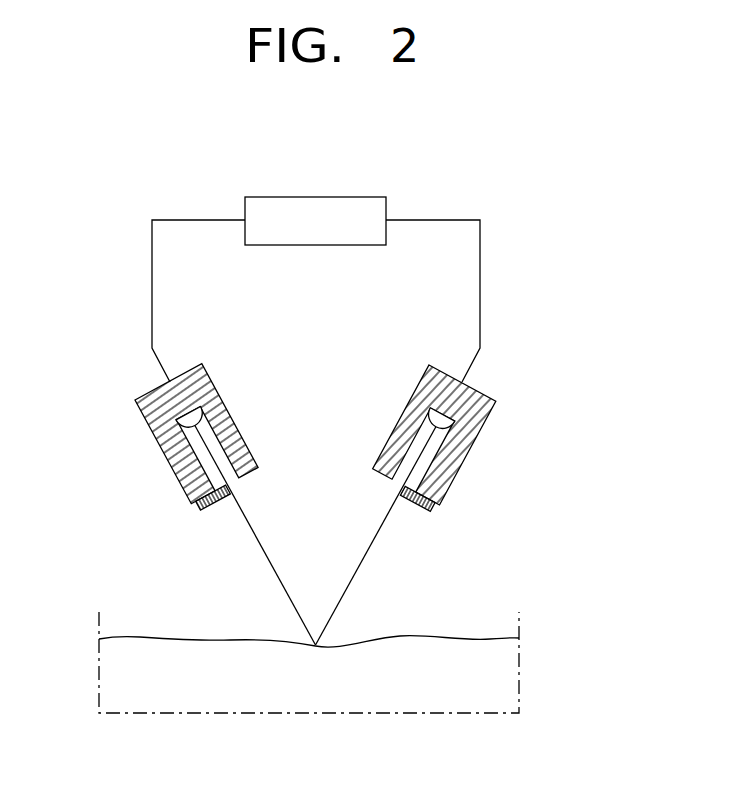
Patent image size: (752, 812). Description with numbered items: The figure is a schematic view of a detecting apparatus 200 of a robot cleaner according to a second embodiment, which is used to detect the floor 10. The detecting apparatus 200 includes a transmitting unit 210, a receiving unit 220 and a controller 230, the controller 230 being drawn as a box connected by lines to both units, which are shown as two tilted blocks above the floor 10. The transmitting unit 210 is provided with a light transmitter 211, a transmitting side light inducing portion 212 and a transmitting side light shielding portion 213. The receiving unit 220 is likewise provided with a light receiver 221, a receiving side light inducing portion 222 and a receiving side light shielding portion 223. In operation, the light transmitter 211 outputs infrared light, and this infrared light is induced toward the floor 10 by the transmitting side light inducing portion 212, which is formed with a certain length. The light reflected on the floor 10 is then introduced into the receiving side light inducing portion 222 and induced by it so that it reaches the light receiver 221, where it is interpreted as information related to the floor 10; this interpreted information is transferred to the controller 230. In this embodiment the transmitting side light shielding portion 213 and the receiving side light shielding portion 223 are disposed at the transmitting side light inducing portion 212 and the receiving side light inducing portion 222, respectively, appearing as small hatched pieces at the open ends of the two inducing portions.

The floor 10 is at (452, 650).
The detecting apparatus 200 is at (527, 222).
The transmitting unit 210 is at (135, 453).
The light transmitter 211 is at (177, 419).
The transmitting side light inducing portion 212 is at (172, 449).
The transmitting side light shielding portion 213 is at (194, 506).
The receiving unit 220 is at (498, 454).
The light receiver 221 is at (454, 419).
The receiving side light inducing portion 222 is at (459, 449).
The receiving side light shielding portion 223 is at (559, 395).
The controller 230 is at (308, 197).